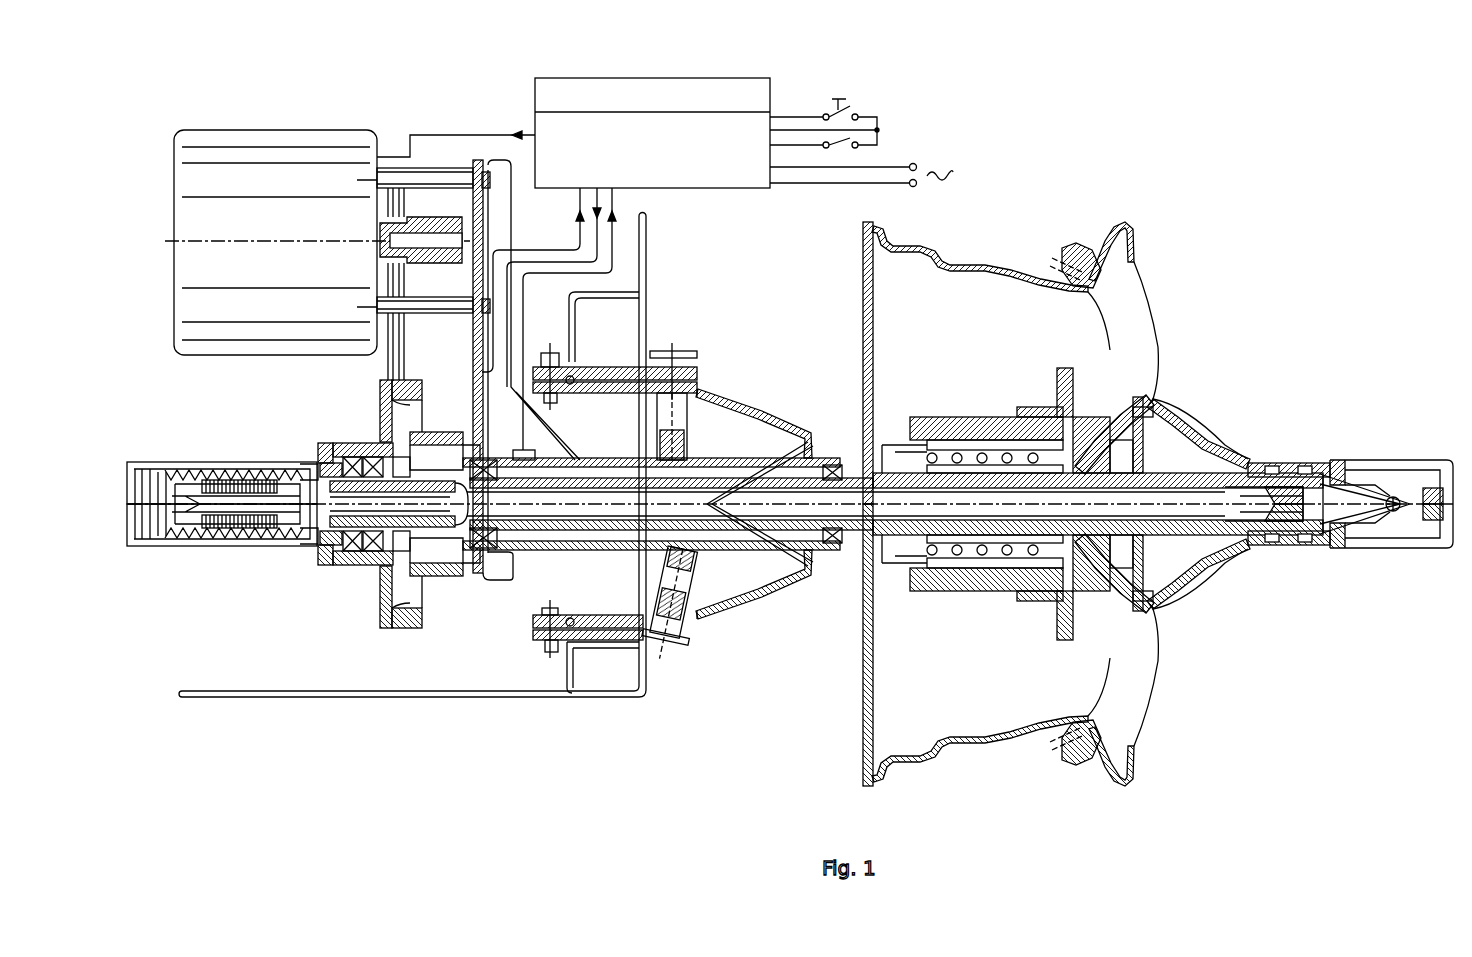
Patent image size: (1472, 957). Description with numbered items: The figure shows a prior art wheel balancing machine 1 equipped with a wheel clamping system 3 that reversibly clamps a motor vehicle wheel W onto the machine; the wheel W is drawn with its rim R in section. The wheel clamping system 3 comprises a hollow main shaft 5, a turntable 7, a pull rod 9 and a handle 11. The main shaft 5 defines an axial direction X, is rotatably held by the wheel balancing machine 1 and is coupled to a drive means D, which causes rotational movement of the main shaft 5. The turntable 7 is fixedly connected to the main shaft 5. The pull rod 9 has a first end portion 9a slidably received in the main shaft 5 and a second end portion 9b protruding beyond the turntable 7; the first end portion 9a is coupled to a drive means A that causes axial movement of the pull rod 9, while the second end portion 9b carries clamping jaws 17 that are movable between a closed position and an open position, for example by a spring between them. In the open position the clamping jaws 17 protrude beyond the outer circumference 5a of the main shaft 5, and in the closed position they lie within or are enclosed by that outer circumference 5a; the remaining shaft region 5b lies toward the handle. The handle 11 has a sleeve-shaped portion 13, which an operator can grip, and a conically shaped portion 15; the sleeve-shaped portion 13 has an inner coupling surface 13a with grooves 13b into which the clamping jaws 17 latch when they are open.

The wheel balancing machine 1 is at (1048, 130).
The wheel clamping system 3 is at (1318, 325).
The hollow main shaft 5 is at (858, 478).
The outer circumference of main shaft 5a is at (1165, 445).
The second shaft portion 5b is at (1175, 532).
The turntable 7 is at (1063, 370).
The pull rod 9 is at (683, 503).
The first end portion of pull rod 9a is at (252, 574).
The second end portion of pull rod 9b is at (1252, 584).
The handle 11 is at (1283, 540).
The sleeve-shaped portion 13 is at (1308, 468).
The inner coupling surface 13a is at (1305, 545).
The grooves 13b is at (1272, 468).
The conically shaped portion 15 is at (1200, 450).
The clamping jaws 17 is at (1347, 470).
The drive means A is at (146, 437).
The drive means D is at (218, 335).
The motor vehicle wheel W is at (1160, 190).
The rim R is at (1117, 245).
The axial direction X is at (707, 505).